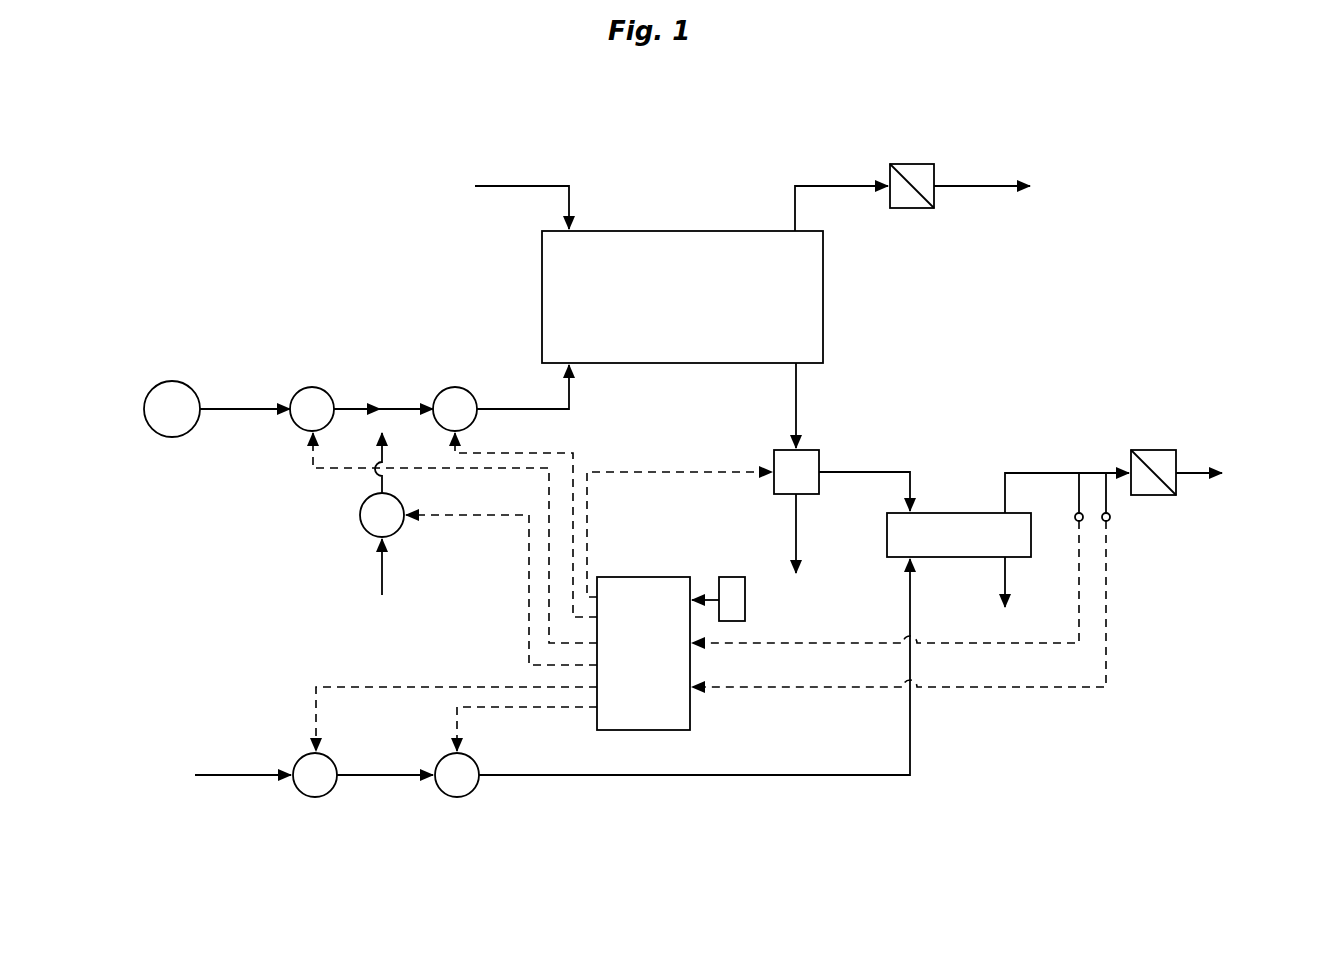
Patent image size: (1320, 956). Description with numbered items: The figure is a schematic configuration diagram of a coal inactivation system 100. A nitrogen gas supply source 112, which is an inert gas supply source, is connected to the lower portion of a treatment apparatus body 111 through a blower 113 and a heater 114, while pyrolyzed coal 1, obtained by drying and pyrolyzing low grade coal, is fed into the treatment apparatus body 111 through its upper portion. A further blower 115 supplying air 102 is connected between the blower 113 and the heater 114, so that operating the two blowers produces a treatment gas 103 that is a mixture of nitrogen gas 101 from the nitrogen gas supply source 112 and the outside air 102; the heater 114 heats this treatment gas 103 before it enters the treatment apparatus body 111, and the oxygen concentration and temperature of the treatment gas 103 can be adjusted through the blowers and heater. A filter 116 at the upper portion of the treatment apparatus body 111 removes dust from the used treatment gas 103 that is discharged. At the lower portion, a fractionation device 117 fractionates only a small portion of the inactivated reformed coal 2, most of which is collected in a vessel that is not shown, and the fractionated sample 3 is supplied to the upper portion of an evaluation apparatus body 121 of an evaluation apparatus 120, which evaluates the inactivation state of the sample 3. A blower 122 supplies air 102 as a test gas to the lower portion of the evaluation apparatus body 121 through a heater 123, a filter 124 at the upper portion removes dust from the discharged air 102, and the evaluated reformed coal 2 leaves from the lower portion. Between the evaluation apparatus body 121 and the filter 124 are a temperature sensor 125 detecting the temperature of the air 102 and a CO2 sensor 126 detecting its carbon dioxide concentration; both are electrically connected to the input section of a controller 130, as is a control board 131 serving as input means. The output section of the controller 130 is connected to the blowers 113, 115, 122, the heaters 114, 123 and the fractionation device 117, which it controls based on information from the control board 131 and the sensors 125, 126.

The coal inactivation system 100 is at (1100, 150).
The nitrogen gas 101 is at (172, 426).
The air 102 is at (802, 759).
The treatment gas 103 is at (540, 397).
The treatment apparatus body 111 is at (668, 229).
The nitrogen gas supply source 112 is at (167, 372).
The blower 113 is at (311, 387).
The heater 114 is at (443, 388).
The blower 115 is at (360, 525).
The filter 116 is at (908, 162).
The fractionation device 117 is at (774, 458).
The evaluation apparatus 120 is at (982, 380).
The evaluation apparatus body 121 is at (961, 511).
The blower 122 is at (316, 797).
The heater 123 is at (457, 797).
The filter 124 is at (1151, 448).
The temperature sensor 125 is at (1076, 522).
The CO2 sensor 126 is at (1111, 519).
The controller 130 is at (634, 575).
The control board 131 is at (729, 575).
The pyrolyzed coal 1 is at (509, 200).
The reformed coal 2 is at (813, 418).
The sample 3 is at (885, 458).